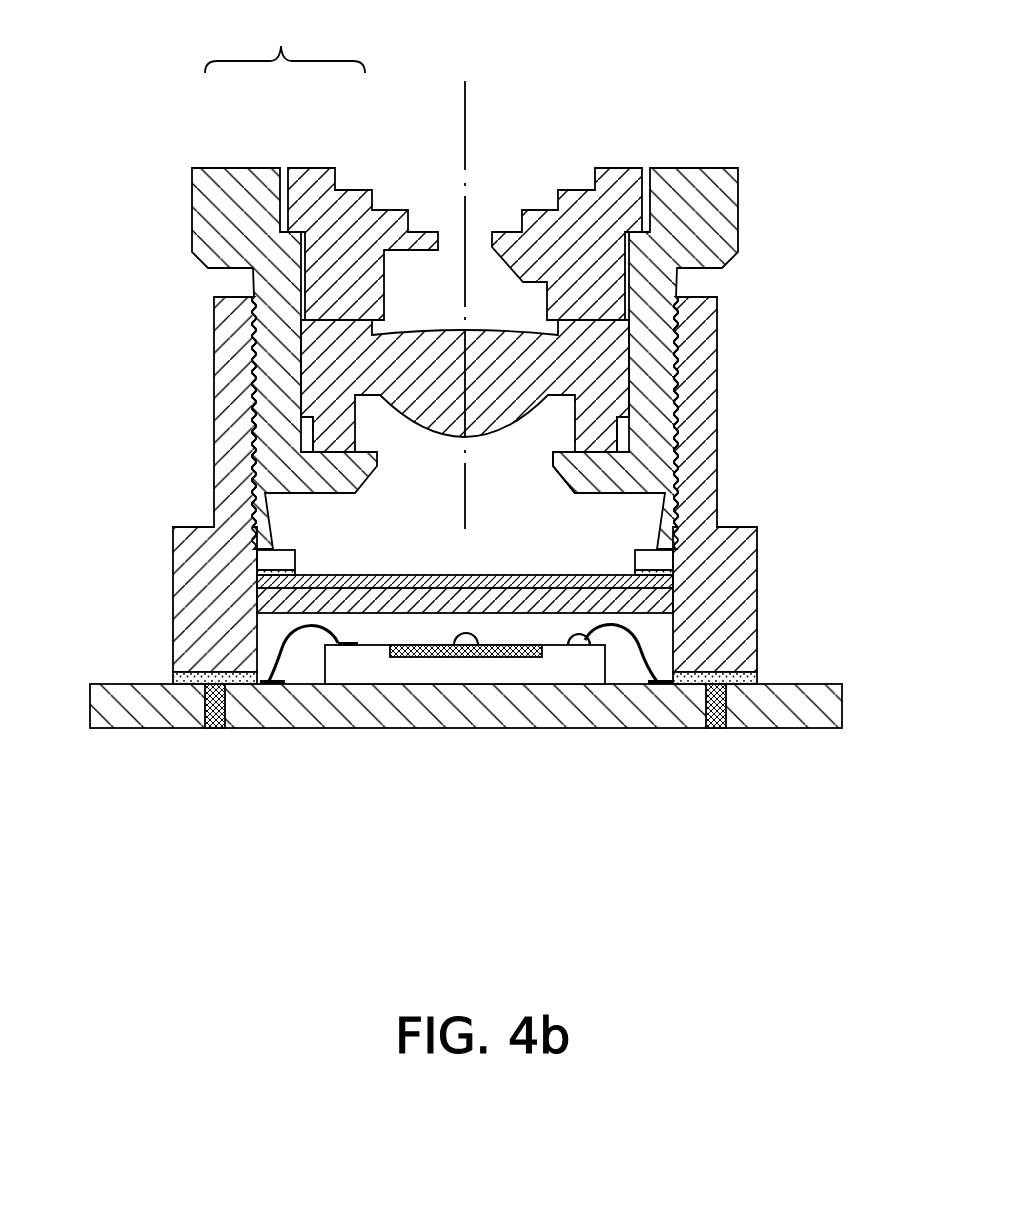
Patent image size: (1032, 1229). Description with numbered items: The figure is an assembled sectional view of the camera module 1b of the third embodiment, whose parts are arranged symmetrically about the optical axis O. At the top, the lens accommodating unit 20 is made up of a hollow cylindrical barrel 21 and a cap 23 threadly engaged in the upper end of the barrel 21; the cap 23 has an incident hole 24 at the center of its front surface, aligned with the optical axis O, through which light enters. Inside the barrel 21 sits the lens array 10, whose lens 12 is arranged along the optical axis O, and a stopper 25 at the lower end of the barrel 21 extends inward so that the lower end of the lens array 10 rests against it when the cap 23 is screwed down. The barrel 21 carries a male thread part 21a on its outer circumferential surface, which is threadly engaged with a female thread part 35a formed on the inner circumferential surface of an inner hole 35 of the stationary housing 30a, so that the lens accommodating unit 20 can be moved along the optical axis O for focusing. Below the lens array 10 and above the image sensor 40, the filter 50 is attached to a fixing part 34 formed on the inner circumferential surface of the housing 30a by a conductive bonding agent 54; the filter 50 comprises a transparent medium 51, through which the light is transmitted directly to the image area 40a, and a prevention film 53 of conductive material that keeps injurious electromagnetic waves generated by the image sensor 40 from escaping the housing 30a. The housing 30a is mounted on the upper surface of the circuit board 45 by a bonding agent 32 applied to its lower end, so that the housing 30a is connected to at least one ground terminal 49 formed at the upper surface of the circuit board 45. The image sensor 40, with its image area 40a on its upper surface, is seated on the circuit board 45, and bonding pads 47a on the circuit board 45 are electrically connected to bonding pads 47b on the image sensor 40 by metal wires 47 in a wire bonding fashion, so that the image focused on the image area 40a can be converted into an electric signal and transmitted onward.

The camera module 1b is at (831, 189).
The optical axis O is at (467, 100).
The lens array 10 is at (747, 325).
The lens 12 is at (610, 380).
The lens accommodating unit 20 is at (285, 40).
The barrel 21 is at (224, 178).
The male thread part 21a is at (240, 348).
The cap 23 is at (308, 176).
The incident hole 24 is at (598, 176).
The stopper 25 is at (647, 475).
The housing 30a is at (222, 307).
The bonding agent 32 is at (173, 680).
The fixing part 34 is at (296, 521).
The inner hole 35 is at (273, 495).
The female thread part 35a is at (257, 390).
The image sensor 40 is at (378, 668).
The image area 40a is at (447, 657).
The circuit board 45 is at (142, 718).
The metal wires 47 is at (627, 633).
The bonding pads 47a is at (650, 684).
The bonding pads 47b is at (563, 647).
The ground terminal 49 is at (215, 730).
The filter 50 is at (825, 563).
The transparent medium 51 is at (655, 605).
The prevention film 53 is at (655, 580).
The bonding agent 54 is at (267, 575).